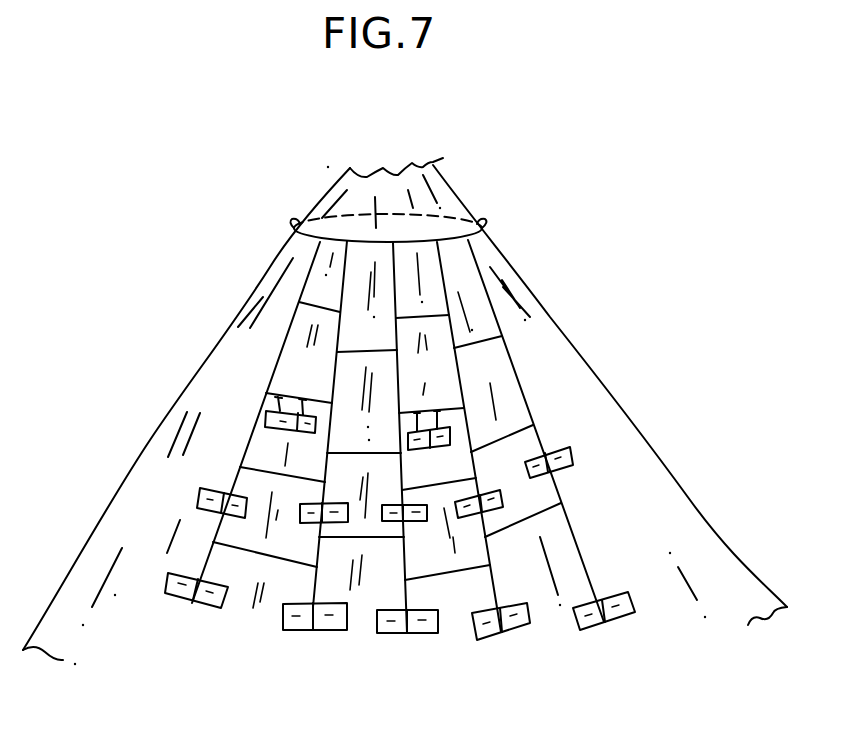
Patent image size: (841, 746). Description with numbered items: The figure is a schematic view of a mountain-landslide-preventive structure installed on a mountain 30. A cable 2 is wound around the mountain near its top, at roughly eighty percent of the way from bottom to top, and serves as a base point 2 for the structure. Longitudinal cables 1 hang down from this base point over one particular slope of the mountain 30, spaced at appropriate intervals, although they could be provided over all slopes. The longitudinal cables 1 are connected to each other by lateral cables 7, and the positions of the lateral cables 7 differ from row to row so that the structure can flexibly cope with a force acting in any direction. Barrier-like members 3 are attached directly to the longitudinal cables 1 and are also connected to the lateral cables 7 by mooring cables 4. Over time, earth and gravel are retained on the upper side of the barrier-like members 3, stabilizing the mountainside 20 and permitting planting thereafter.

The longitudinal cable 1 is at (520, 383).
The cable serving as base point 2 is at (425, 240).
The barrier-like member 3 is at (265, 417).
The mooring cable 4 is at (265, 400).
The lateral cable 7 is at (547, 497).
The mountainside 20 is at (640, 520).
The mountain 30 is at (557, 260).